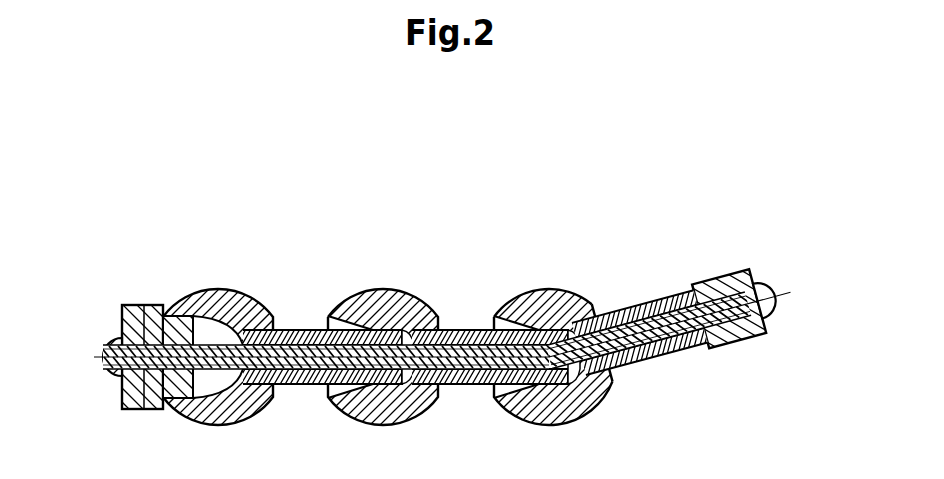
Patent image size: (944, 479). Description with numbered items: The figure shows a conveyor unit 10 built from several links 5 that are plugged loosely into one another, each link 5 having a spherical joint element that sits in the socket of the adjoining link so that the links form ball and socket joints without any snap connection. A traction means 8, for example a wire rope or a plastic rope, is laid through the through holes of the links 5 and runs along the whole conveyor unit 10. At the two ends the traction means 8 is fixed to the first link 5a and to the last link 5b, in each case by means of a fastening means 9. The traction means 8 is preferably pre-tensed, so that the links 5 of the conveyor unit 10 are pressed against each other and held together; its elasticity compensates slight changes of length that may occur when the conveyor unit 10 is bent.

The link 5 is at (441, 270).
The first link 5a is at (268, 272).
The last link 5b is at (621, 268).
The traction means 8 is at (466, 384).
The fastening means 9 is at (122, 407).
The conveyor unit 10 is at (560, 196).